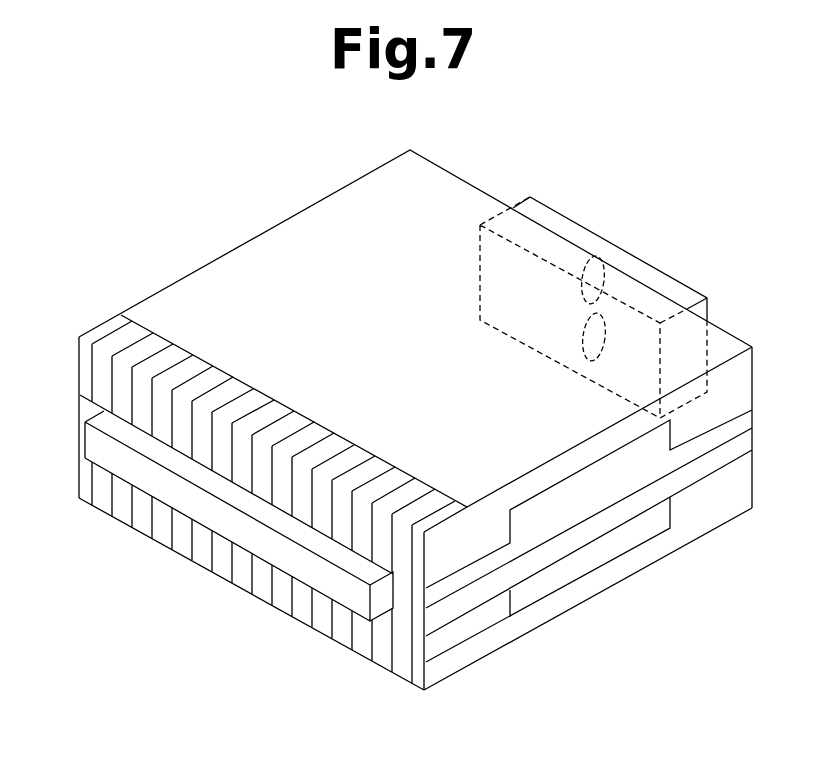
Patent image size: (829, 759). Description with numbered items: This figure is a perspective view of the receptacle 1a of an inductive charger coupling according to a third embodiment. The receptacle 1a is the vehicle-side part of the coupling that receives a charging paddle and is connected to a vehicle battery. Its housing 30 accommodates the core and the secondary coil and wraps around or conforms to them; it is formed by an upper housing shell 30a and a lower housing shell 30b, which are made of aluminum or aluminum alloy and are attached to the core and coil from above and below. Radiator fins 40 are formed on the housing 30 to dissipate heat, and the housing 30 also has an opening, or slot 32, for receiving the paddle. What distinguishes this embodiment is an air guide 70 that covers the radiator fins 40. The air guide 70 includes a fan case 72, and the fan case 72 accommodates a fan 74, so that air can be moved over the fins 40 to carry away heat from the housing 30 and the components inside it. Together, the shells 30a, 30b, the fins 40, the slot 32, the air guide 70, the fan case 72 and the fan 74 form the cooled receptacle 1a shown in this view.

The charging receptacle 1a is at (537, 159).
The air guide 70 is at (313, 227).
The fan case 72 is at (648, 278).
The fan 74 is at (592, 308).
The radiator fins 40 is at (130, 345).
The slot 32 is at (110, 457).
The housing 30 is at (559, 747).
The upper housing shell 30a is at (466, 578).
The lower housing shell 30b is at (490, 592).